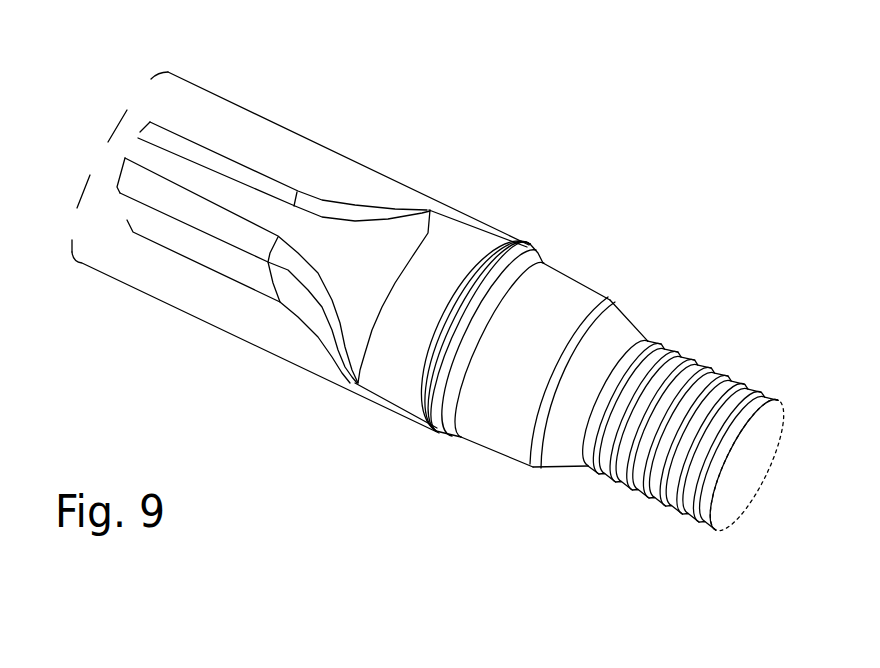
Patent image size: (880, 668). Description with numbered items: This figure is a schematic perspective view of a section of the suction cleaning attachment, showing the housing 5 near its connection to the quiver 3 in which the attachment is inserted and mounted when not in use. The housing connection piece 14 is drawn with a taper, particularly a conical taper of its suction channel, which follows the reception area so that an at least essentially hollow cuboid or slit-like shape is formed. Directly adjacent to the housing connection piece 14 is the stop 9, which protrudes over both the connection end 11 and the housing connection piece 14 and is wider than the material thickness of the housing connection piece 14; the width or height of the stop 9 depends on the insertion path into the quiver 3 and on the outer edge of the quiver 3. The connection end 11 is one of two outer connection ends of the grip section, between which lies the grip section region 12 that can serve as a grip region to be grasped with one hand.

The quiver 3 is at (277, 123).
The housing 5 is at (568, 110).
The stop 9 is at (537, 245).
The connection end 11 is at (583, 284).
The grip section region 12 is at (705, 362).
The housing connection piece 14 is at (460, 218).